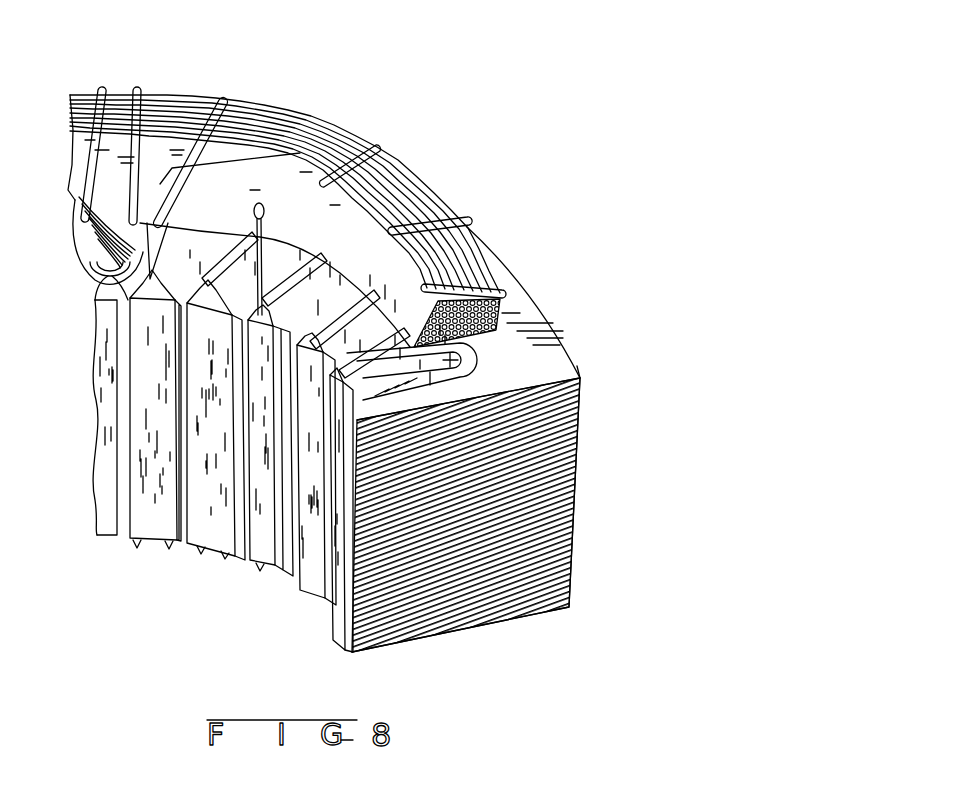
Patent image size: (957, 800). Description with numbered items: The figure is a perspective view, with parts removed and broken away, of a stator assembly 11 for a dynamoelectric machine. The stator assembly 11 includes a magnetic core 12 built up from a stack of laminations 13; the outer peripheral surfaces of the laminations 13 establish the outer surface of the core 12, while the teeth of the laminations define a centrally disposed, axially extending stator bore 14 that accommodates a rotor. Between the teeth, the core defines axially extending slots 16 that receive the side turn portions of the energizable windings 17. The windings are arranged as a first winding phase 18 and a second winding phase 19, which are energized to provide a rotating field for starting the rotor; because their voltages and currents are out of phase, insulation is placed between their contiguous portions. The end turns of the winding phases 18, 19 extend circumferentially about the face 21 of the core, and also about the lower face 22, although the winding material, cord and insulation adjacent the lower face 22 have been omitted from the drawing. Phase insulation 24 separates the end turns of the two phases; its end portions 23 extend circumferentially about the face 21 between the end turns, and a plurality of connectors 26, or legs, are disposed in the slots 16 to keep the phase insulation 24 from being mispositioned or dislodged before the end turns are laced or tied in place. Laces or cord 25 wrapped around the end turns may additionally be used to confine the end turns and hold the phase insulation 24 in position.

The stator assembly 11 is at (574, 347).
The magnetic core 12 is at (580, 373).
The laminations 13 is at (565, 487).
The stator bore 14 is at (266, 556).
The slots 16 is at (458, 360).
The energizable windings 17 is at (288, 110).
The first winding phase 18 is at (85, 103).
The second winding phase 19 is at (80, 245).
The face 21 is at (521, 293).
The lower face 22 is at (470, 628).
The end portions 23 is at (356, 216).
The phase insulation 24 is at (233, 207).
The binding ties 25 is at (222, 102).
The connectors 26 is at (262, 278).